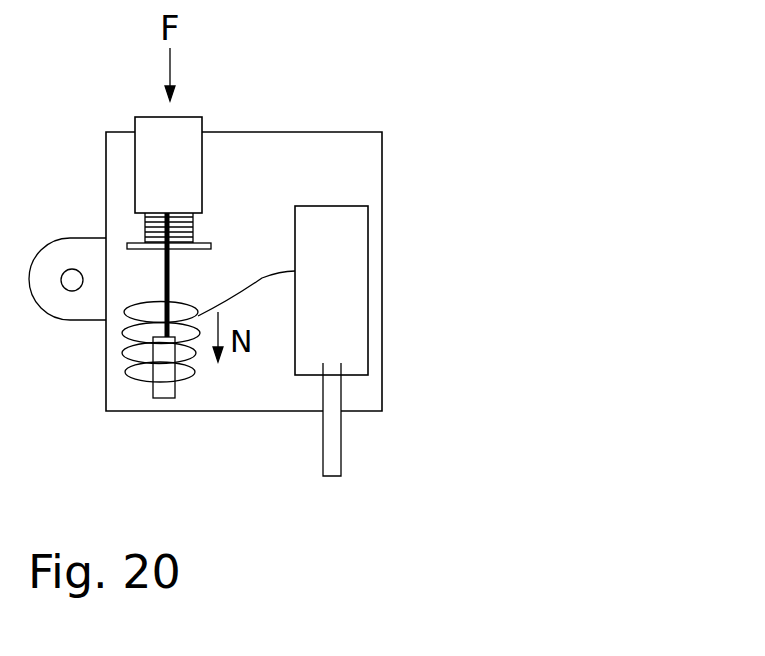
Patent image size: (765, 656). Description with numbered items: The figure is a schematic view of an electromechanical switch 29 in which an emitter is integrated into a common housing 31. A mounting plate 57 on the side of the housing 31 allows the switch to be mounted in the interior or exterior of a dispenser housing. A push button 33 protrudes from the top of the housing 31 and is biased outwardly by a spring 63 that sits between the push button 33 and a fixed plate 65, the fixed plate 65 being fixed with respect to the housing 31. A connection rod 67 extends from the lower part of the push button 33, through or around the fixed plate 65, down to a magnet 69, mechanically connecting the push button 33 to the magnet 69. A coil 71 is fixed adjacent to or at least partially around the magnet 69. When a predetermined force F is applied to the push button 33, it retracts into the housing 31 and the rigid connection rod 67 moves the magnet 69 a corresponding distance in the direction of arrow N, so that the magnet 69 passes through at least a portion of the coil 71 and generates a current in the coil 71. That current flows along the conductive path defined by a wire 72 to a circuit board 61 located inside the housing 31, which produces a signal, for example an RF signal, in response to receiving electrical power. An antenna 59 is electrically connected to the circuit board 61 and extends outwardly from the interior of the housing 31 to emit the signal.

The electromechanical switch 29 is at (408, 89).
The housing 31 is at (382, 171).
The push button 33 is at (187, 131).
The mounting plate 57 is at (53, 302).
The antenna 59 is at (336, 466).
The circuit board 61 is at (350, 288).
The spring 63 is at (192, 226).
The fixed plate 65 is at (197, 250).
The connection rod 67 is at (163, 272).
The magnet 69 is at (163, 389).
The coil 71 is at (138, 373).
The wire 72 is at (259, 279).